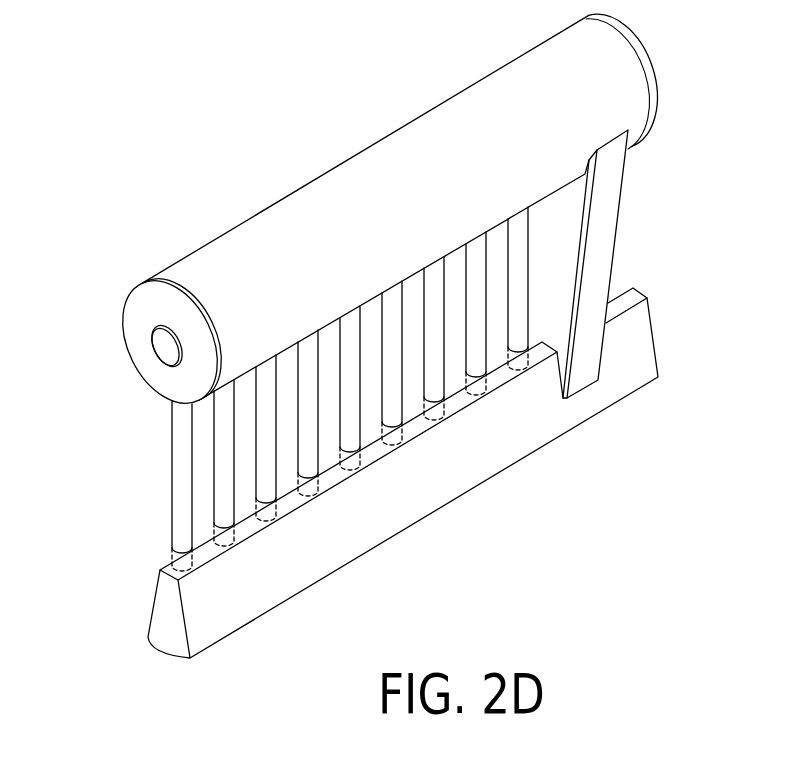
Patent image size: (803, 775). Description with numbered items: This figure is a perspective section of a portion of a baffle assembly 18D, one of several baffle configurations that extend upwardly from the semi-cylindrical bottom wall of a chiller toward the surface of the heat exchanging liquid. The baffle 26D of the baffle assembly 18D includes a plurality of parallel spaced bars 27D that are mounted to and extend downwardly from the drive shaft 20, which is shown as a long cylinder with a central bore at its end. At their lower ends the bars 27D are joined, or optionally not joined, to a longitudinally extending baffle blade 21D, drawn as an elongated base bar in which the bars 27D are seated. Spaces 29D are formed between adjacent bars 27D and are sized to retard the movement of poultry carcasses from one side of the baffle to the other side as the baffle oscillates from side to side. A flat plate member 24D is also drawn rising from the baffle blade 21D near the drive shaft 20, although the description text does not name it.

The baffle assembly 18D is at (393, 346).
The drive shaft 20 is at (322, 222).
The baffle blade 21D is at (215, 605).
The blade 24D is at (615, 232).
The baffle 26D is at (166, 433).
The parallel spaced bars 27D is at (222, 496).
The spaces 29D is at (283, 462).